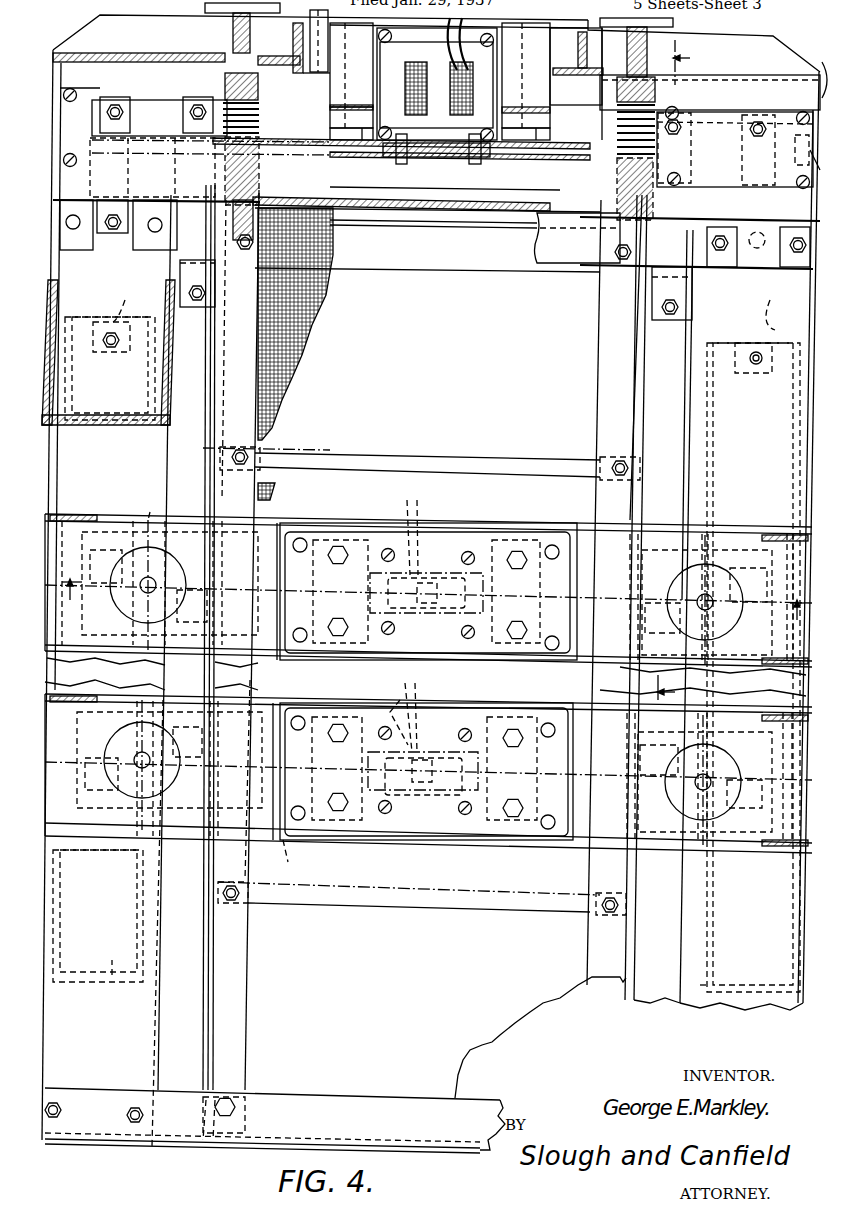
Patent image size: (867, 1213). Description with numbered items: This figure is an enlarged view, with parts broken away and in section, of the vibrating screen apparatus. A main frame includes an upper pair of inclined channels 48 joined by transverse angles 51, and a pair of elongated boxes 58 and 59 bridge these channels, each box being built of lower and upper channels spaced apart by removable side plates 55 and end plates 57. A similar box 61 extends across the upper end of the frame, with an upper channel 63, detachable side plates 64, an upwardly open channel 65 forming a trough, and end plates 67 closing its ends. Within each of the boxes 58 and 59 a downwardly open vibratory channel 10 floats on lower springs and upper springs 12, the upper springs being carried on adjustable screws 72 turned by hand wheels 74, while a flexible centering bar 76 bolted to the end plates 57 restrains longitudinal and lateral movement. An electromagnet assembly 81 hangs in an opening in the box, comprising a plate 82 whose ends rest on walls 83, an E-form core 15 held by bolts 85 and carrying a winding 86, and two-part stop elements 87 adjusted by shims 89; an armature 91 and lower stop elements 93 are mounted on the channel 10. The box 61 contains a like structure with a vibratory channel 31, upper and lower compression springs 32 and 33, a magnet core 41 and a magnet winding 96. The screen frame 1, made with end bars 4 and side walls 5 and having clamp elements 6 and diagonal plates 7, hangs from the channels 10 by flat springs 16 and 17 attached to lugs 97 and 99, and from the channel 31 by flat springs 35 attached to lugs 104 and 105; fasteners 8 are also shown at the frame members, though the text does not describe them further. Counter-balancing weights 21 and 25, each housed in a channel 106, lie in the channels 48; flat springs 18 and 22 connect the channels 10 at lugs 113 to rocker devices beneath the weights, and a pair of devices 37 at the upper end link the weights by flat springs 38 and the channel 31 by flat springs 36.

The screen frame 1 is at (235, 383).
The end bars 4 is at (402, 268).
The side walls 5 is at (207, 938).
The clamp elements 6 is at (433, 612).
The diagonal plates 7 is at (680, 372).
The bolt 8 is at (612, 462).
The vibratory channel 10 is at (128, 512).
The upper springs 12 is at (205, 452).
The E-form core 15 is at (401, 626).
The flat springs 16 is at (690, 540).
The flat springs 17 is at (199, 678).
The flat spring 18 is at (745, 553).
The counter-balancing weight 21 is at (700, 978).
The flat springs 22 is at (103, 670).
The counter-balancing weight 25 is at (112, 980).
The vibratory channel 31 is at (508, 165).
The upper compression spring 32 is at (258, 118).
The lower compression spring 33 is at (260, 170).
The flat springs 35 is at (207, 275).
The flat spring 36 is at (449, 166).
The devices 37 is at (100, 235).
The flat spring 38 is at (448, 335).
The magnet core 41 is at (437, 80).
The upper inclined channels 48 is at (157, 1036).
The transverse angles 51 is at (180, 1148).
The side plates 55 is at (370, 516).
The end plates 57 is at (55, 510).
The elongated box 58 is at (475, 710).
The elongated box 59 is at (486, 530).
The box 61 is at (782, 98).
The upper channel 63 is at (90, 70).
The side plates 64 is at (825, 165).
The upwardly open channel 65 is at (738, 50).
The end plates 67 is at (824, 73).
The adjustable screws 72 is at (236, 40).
The hand wheels 74 is at (132, 608).
The flexible bar 76 is at (333, 160).
The electromagnet assembly 81 is at (316, 770).
The plate 82 is at (319, 41).
The walls 83 is at (270, 781).
The bolts 85 is at (458, 808).
The winding 86 is at (430, 577).
The stop elements 87 is at (330, 90).
The shims 89 is at (362, 103).
The armature 91 is at (438, 165).
The stop elements 93 is at (363, 165).
The magnet winding 96 is at (439, 88).
The lugs 97 is at (715, 692).
The lugs 99 is at (220, 748).
The lugs 104 is at (217, 295).
The lugs 105 is at (186, 128).
The channel 106 is at (70, 402).
The lug 113 is at (134, 664).